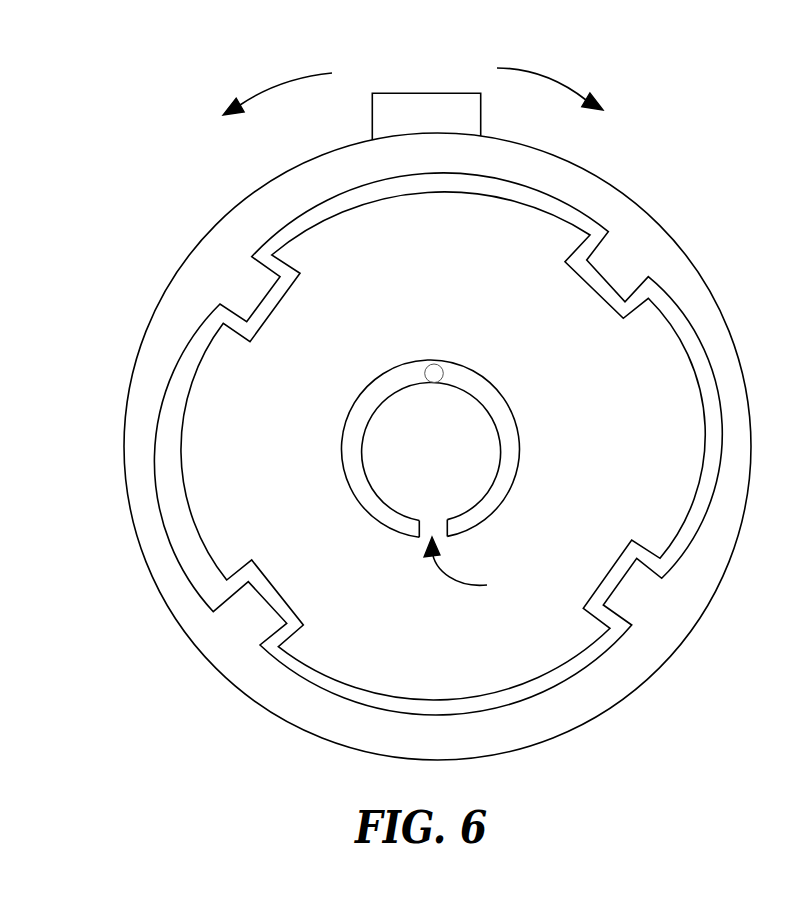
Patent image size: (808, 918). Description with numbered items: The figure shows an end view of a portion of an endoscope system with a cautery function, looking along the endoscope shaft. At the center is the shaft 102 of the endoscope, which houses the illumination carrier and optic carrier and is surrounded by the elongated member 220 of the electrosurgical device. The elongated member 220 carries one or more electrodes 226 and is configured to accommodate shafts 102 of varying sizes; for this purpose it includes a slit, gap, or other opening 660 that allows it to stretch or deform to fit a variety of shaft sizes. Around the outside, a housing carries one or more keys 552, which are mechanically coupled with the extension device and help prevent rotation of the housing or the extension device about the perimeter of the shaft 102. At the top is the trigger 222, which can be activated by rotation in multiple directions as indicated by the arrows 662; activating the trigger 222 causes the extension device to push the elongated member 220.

The shaft 102 is at (453, 466).
The elongated member 220 is at (502, 408).
The trigger 222 is at (405, 93).
The electrode 226 is at (440, 366).
The key 552 is at (607, 270).
The opening 660 is at (477, 567).
The arrows 662 is at (300, 73).